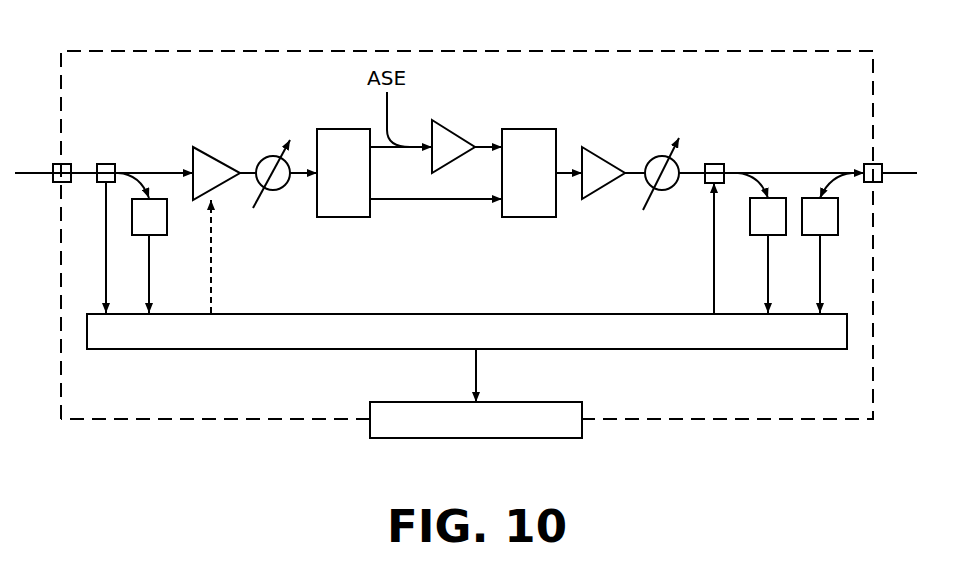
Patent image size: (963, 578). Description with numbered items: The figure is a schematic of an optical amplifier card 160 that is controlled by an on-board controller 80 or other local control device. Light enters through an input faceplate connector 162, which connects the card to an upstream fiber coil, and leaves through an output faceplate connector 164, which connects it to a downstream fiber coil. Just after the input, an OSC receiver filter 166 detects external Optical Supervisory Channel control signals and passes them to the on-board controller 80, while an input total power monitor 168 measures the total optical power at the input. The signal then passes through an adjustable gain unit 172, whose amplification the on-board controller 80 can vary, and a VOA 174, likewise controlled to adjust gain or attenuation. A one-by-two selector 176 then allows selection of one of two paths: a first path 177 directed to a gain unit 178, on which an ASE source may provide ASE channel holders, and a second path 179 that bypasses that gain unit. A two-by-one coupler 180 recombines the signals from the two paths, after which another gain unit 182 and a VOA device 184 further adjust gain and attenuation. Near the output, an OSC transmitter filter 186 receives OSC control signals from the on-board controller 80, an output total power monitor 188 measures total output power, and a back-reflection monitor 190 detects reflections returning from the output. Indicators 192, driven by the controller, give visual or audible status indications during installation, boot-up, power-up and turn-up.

The optical amplifier card 160 is at (262, 50).
The input faceplate connector 162 is at (60, 183).
The output faceplate connector 164 is at (873, 182).
The OSC receiver filter 166 is at (106, 163).
The input total power monitor 168 is at (153, 236).
The adjustable gain unit 172 is at (193, 156).
The VOA 174 is at (261, 161).
The 1×2 selector 176 is at (347, 129).
The first path 177 is at (388, 149).
The gain unit 178 is at (455, 127).
The second path 179 is at (443, 200).
The 2×1 coupler 180 is at (527, 129).
The gain unit 182 is at (607, 190).
The VOA device 184 is at (647, 161).
The OSC transmitter filter 186 is at (709, 164).
The output total power monitor 188 is at (752, 228).
The back-reflection monitor 190 is at (838, 218).
The on-board controller 80 is at (474, 314).
The indicators 192 is at (413, 402).